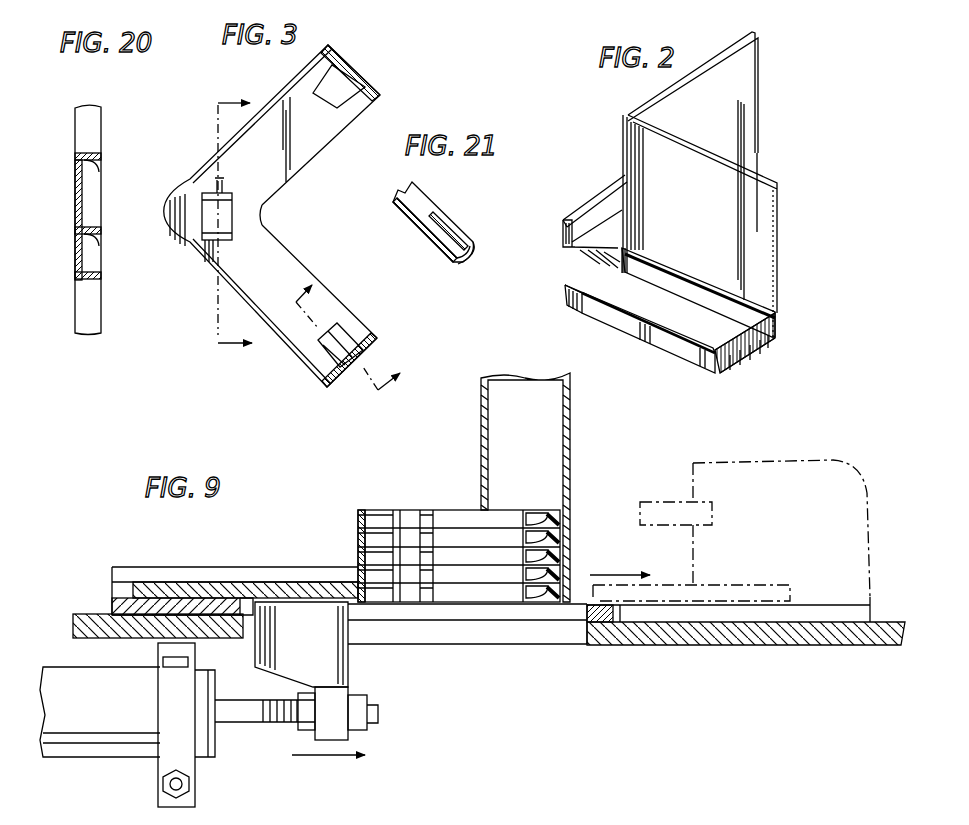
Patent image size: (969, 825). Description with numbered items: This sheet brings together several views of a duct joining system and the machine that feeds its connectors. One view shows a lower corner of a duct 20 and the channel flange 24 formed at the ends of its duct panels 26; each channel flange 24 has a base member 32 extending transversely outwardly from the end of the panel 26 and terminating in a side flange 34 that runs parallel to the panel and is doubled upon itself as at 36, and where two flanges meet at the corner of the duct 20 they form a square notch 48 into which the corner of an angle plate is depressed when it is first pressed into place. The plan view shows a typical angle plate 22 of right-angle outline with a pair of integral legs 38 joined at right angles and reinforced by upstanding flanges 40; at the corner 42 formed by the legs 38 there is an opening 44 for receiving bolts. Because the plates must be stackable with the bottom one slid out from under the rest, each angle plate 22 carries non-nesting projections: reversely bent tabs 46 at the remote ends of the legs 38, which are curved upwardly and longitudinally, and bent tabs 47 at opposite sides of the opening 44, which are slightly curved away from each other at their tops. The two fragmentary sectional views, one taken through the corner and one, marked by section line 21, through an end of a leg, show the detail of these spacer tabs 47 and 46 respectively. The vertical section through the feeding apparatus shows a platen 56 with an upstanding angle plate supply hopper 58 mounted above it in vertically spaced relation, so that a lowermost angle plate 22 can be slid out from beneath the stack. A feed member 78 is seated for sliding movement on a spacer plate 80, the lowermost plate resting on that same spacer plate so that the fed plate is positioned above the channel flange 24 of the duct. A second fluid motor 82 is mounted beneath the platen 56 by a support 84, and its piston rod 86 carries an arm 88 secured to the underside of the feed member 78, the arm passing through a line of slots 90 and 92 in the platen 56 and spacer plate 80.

In FIG. 3, the duct 20 is at (238, 230).
In FIG. 2, the duct 20 is at (633, 96).
In FIG. 9, the duct 20 is at (828, 485).
In FIG. 3, the section line 21 is at (363, 320).
In FIG. 20, the angle plate 22 is at (66, 108).
In FIG. 3, the angle plate 22 is at (203, 278).
In FIG. 21, the angle plate 22 is at (397, 207).
In FIG. 9, the angle plate 22 is at (500, 605).
In FIG. 2, the channel flange 24 is at (607, 208).
In FIG. 9, the channel flange 24 is at (687, 647).
In FIG. 2, the duct panel 26 is at (757, 240).
In FIG. 2, the base member 32 is at (637, 303).
In FIG. 2, the side flange 34 is at (668, 342).
In FIG. 2, the doubled portion of side flange 36 is at (563, 240).
In FIG. 3, the leg 38 is at (318, 130).
In FIG. 20, the upstanding flange 40 is at (97, 152).
In FIG. 3, the upstanding flange 40 is at (290, 95).
In FIG. 3, the corner 42 is at (205, 200).
In FIG. 20, the opening 44 is at (76, 214).
In FIG. 3, the opening 44 is at (204, 218).
In FIG. 3, the reversely bent tab 46 is at (345, 78).
In FIG. 21, the reversely bent tab 46 is at (462, 242).
In FIG. 20, the bent tab 47 is at (100, 192).
In FIG. 3, the bent tab 47 is at (231, 190).
In FIG. 2, the square notch 48 is at (587, 276).
In FIG. 9, the platen 56 is at (92, 612).
In FIG. 9, the angle plate supply hopper 58 is at (481, 461).
In FIG. 9, the feed member 78 is at (308, 582).
In FIG. 9, the spacer plate 80 is at (205, 603).
In FIG. 9, the second fluid motor 82 is at (126, 717).
In FIG. 9, the support 84 is at (195, 803).
In FIG. 9, the piston rod 86 is at (245, 705).
In FIG. 9, the arm 88 is at (324, 658).
In FIG. 9, the slot 90 is at (462, 645).
In FIG. 9, the slot 92 is at (553, 614).